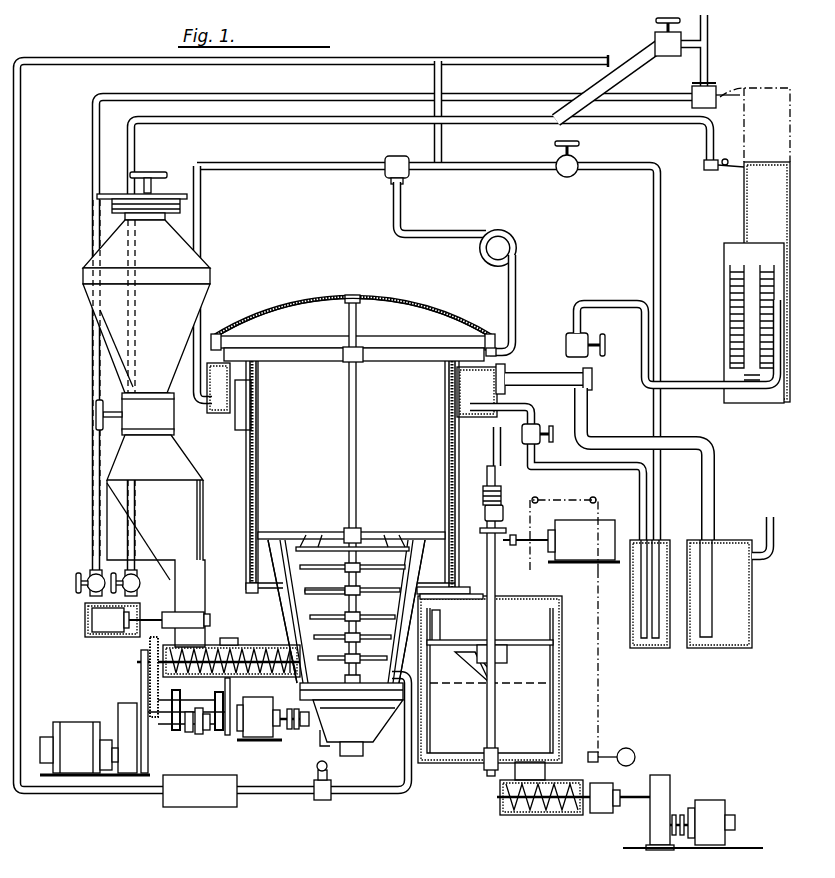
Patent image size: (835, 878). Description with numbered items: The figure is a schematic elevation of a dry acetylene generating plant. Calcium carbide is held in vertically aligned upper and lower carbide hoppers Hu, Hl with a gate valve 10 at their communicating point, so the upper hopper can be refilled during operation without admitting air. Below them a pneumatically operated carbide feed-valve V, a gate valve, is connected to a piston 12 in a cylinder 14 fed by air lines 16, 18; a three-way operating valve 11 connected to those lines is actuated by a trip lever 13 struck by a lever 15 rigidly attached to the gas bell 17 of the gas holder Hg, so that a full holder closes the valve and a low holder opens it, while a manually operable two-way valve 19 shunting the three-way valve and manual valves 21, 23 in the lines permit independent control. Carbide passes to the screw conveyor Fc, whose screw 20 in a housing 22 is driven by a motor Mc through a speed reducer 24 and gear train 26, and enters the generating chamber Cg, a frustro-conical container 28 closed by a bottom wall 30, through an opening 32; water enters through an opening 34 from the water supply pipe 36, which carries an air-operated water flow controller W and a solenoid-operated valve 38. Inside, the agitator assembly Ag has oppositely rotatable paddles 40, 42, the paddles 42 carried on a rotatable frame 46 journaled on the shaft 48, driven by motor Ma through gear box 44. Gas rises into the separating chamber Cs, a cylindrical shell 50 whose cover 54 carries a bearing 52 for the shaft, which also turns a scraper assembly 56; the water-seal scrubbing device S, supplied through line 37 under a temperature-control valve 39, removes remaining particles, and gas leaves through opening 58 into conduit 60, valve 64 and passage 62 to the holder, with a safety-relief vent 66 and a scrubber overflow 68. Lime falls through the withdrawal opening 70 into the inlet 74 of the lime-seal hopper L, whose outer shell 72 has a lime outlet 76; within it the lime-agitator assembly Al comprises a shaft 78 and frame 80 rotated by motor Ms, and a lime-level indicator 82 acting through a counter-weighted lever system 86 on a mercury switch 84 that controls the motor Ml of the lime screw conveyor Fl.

The water supply pipe 36 is at (333, 68).
The air line 16 is at (494, 99).
The air line 18 is at (498, 114).
The two-way valve 19 is at (652, 40).
The three-way operating valve 11 is at (710, 88).
The trip lever 13 is at (733, 85).
The lever 15 is at (736, 160).
The gas bell 17 is at (748, 210).
The gas holder Hg is at (724, 283).
The temperature-control valve 39 is at (405, 147).
The line 37 is at (200, 246).
The upper carbide hopper Hu is at (105, 316).
The gate valve 10 is at (160, 426).
The lower carbide hopper Hl is at (148, 538).
The manually operable valve 21 is at (84, 592).
The manually operable valve 23 is at (140, 585).
The cylinder 14 is at (84, 620).
The piston 12 is at (118, 630).
The carbide feed-valve V is at (168, 612).
The housing 22 is at (236, 645).
The screw conveyor Fc is at (224, 645).
The screw 20 is at (288, 649).
The speed reducer 24 is at (128, 703).
The gear train 26 is at (205, 700).
The motor Mc is at (76, 728).
The motor Ma is at (272, 690).
The separating or dust-settling chamber Cs is at (262, 462).
The cylindrical shell 50 is at (250, 508).
The bearing 52 is at (358, 300).
The cover 54 is at (444, 312).
The opening 58 is at (508, 372).
The conduit 60 is at (556, 364).
The valve 64 is at (566, 338).
The passage 62 is at (630, 292).
The safety-relief vent 66 is at (732, 640).
The overflow 68 is at (652, 640).
The water-seal scrubbing device S is at (470, 392).
The shaft 48 is at (360, 530).
The frustro-conical container 28 is at (288, 596).
The rotatable frame 46 is at (334, 548).
The agitator assembly Ag is at (378, 590).
The paddles 40 is at (320, 580).
The paddles 42 is at (337, 586).
The generating chamber Cg is at (306, 616).
The scraper assembly 56 is at (262, 574).
The opening 32 is at (302, 686).
The wall 30 is at (352, 700).
The opening 34 is at (370, 716).
The gear box 44 is at (322, 737).
The solenoid-operated valve 38 is at (324, 796).
The water flow controller W is at (206, 800).
The outer cylindrical shell 72 is at (562, 705).
The lime-seal hopper L is at (560, 676).
The lime withdrawal opening 70 is at (448, 600).
The inlet 74 is at (437, 612).
The lime-agitator assembly Al is at (525, 639).
The lime-agitator frame 80 is at (455, 660).
The lime-level indicator 82 is at (478, 678).
The rotatable shaft 78 is at (486, 700).
The lime outlet 76 is at (528, 738).
The counter-weighted lever system 86 is at (500, 500).
The motor Ms is at (580, 526).
The mercury switch 84 is at (640, 742).
The screw conveyor Fl is at (536, 814).
The motor Ml is at (708, 800).